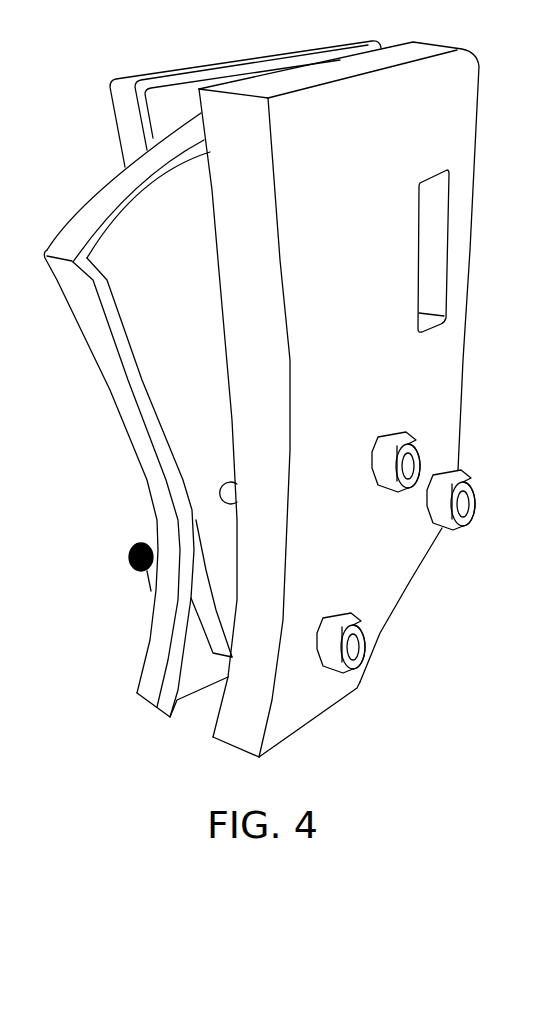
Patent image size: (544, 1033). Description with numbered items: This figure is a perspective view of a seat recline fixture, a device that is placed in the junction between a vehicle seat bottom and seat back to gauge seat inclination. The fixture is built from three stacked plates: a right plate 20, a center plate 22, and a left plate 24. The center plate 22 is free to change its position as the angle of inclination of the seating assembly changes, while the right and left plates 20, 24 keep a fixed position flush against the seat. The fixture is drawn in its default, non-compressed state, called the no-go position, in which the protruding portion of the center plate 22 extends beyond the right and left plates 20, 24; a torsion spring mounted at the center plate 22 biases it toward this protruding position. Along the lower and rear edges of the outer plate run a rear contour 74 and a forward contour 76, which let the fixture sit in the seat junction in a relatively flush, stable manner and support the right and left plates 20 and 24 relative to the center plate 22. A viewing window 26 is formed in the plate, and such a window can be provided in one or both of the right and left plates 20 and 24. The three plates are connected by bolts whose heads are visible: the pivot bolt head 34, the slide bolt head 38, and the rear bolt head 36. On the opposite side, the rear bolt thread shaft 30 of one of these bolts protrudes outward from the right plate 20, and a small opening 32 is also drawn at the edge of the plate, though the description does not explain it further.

The right plate 20 is at (165, 101).
The center plate 22 is at (133, 238).
The left plate 24 is at (453, 102).
The viewing window 26 is at (434, 245).
The rear bolt thread shaft 30 is at (137, 578).
The hole 32 is at (226, 486).
The pivot bolt head 34 is at (354, 648).
The rear bolt head 36 is at (468, 506).
The slide bolt head 38 is at (416, 462).
The rear contour 74 is at (409, 599).
The forward contour 76 is at (329, 720).